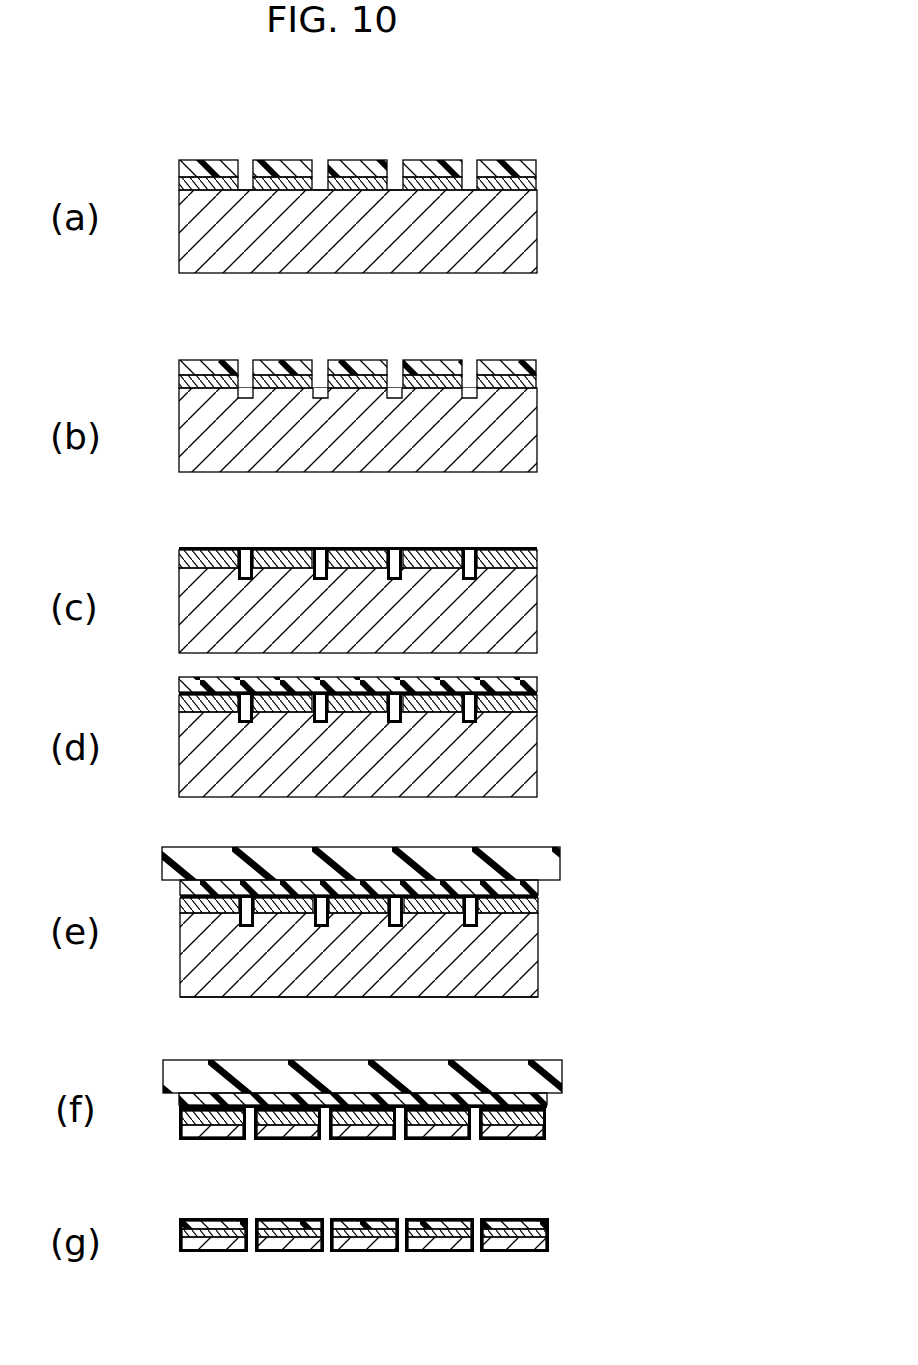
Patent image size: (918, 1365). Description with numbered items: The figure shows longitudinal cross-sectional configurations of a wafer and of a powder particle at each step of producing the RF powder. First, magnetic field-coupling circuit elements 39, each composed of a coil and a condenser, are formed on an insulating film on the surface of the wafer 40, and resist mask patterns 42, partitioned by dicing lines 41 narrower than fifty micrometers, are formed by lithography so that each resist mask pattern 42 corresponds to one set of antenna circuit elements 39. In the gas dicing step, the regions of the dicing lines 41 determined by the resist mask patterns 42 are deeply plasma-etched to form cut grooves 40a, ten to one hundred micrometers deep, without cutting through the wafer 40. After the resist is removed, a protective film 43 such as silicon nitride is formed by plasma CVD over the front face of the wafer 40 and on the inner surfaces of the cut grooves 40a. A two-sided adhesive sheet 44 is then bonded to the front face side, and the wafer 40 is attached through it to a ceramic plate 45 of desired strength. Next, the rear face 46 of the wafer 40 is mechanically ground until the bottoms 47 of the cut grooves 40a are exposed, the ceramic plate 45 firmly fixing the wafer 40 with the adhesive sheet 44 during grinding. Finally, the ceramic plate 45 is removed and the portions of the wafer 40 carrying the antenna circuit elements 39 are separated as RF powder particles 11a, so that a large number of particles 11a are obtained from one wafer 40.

The magnetic field-coupling circuit element 39 is at (179, 181).
The wafer 40 is at (537, 228).
The cut groove 40a is at (245, 383).
The dicing line 41 is at (246, 177).
The resist mask pattern 42 is at (210, 160).
The protective film 43 is at (525, 547).
The two-sided adhesive sheet 44 is at (537, 684).
The ceramic plate 45 is at (505, 847).
The rear face 46 is at (476, 997).
The bottom of cut groove 47 is at (250, 1141).
The RF powder particle 11a is at (218, 1252).